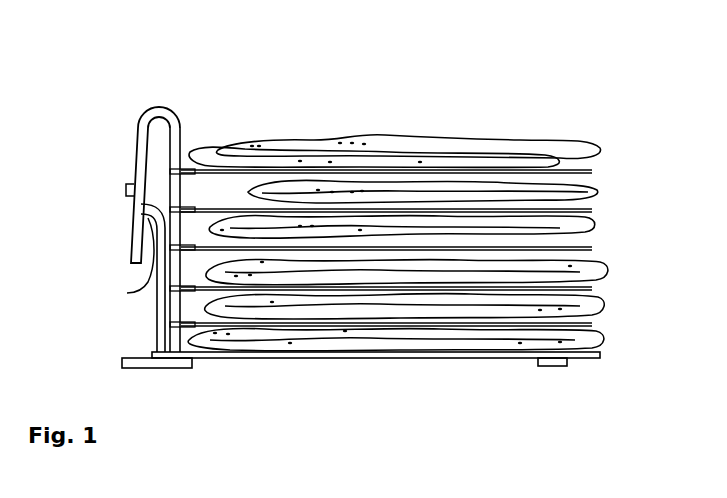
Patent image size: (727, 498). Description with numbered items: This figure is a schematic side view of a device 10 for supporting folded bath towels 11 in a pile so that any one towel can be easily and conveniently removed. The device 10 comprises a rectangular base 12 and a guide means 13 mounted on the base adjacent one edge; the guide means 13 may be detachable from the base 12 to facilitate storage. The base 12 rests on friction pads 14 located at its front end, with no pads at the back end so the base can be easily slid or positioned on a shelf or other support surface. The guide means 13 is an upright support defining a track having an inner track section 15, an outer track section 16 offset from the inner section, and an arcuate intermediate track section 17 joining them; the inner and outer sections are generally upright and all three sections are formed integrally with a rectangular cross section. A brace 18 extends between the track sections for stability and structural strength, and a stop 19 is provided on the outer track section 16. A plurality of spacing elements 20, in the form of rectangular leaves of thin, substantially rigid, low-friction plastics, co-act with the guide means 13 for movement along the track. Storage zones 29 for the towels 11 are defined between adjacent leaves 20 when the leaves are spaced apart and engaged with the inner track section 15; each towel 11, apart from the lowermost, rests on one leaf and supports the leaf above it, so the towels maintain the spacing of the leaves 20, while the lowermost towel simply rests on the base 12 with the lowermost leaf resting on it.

The device 10 is at (208, 110).
The bath towels 11 is at (547, 150).
The base 12 is at (450, 358).
The guide means 13 is at (138, 121).
The friction pads 14 is at (548, 367).
The inner track section 15 is at (177, 118).
The outer track section 16 is at (138, 168).
The intermediate track section 17 is at (150, 109).
The brace 18 is at (127, 293).
The stop 19 is at (127, 190).
The spacing elements 20 is at (588, 172).
The storage zones 29 is at (229, 188).